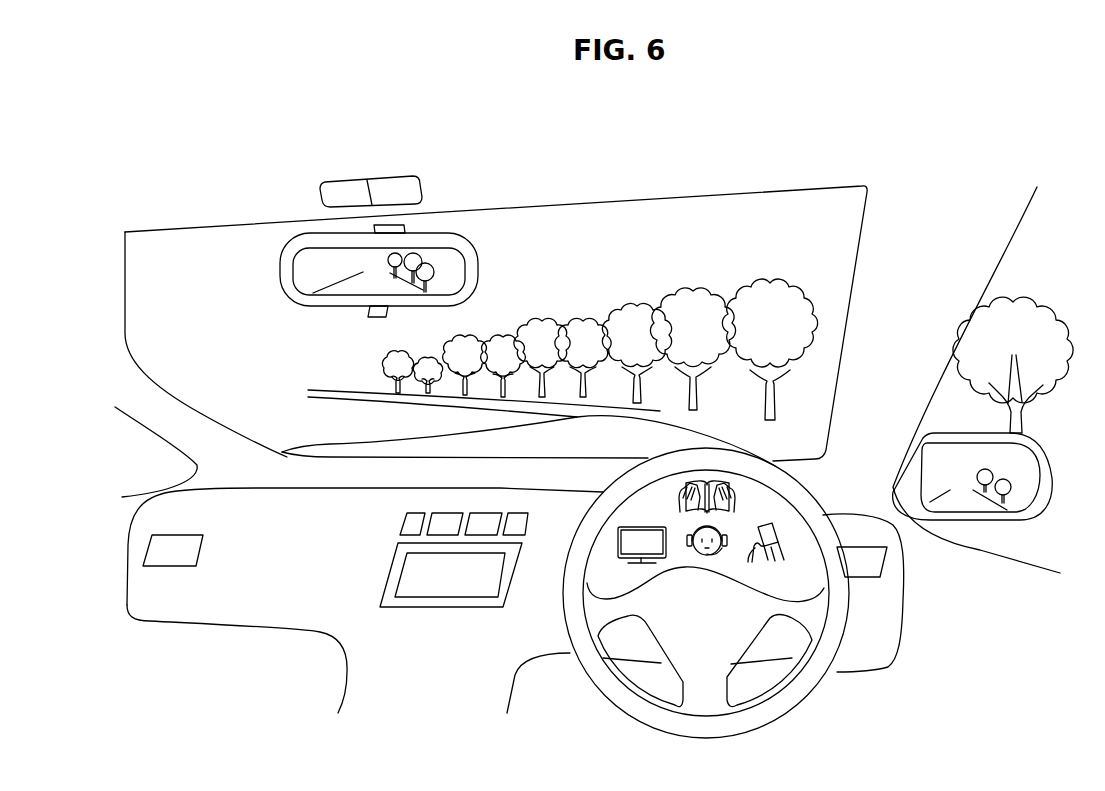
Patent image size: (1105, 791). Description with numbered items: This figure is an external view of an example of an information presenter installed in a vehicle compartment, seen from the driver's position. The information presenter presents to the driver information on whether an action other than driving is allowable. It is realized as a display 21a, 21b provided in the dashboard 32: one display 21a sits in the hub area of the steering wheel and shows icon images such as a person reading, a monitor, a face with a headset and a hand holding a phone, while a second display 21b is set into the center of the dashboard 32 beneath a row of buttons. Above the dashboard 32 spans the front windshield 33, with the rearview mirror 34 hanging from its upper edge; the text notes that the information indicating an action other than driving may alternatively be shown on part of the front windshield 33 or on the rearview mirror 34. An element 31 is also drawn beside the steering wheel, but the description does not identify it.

The display 21a is at (782, 515).
The display 21b is at (452, 583).
The instrument panel 31 is at (840, 603).
The dashboard 32 is at (280, 620).
The front windshield 33 is at (840, 247).
The rearview mirror 34 is at (455, 267).